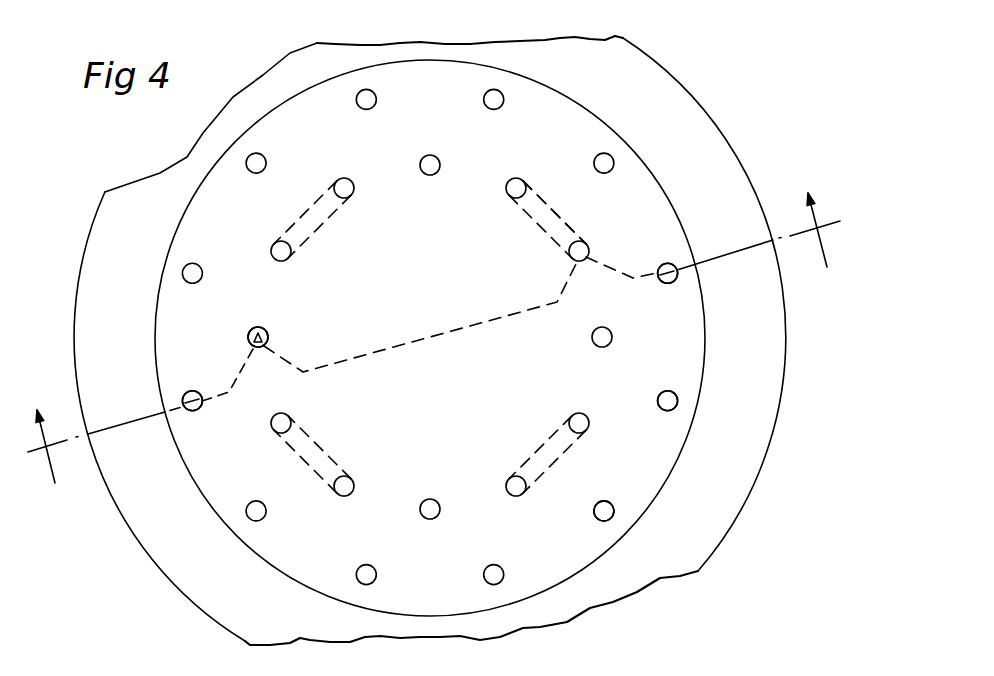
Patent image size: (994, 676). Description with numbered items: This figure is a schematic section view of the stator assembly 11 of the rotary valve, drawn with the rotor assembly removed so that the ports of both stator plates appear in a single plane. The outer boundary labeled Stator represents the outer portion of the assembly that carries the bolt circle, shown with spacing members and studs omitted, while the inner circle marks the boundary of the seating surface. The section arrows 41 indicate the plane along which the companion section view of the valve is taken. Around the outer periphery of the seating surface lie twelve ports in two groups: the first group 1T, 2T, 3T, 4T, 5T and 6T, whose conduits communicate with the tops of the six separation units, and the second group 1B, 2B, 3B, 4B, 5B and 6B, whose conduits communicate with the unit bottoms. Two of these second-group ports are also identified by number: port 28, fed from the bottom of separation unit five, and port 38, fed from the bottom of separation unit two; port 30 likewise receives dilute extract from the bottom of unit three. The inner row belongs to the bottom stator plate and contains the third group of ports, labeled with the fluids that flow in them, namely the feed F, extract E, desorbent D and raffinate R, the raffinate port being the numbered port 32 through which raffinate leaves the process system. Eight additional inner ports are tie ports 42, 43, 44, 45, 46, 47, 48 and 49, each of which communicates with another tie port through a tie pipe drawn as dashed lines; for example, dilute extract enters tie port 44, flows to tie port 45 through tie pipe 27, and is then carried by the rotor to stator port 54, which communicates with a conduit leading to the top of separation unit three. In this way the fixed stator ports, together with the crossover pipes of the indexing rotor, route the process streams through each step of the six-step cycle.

The stator assembly 11 is at (406, 340).
The stator Stator is at (488, 338).
The section arrows 41 is at (439, 343).
The tie pipe 27 is at (556, 210).
The port 28 is at (215, 421).
The port 30 is at (623, 498).
The port 32 is at (237, 328).
The port 38 is at (650, 259).
The tie port 42 is at (314, 200).
The tie port 43 is at (311, 245).
The tie port 44 is at (539, 207).
The tie port 45 is at (571, 257).
The tie port 46 is at (549, 433).
The tie port 47 is at (528, 482).
The tie port 48 is at (344, 456).
The tie port 49 is at (307, 442).
The stator port 54 is at (652, 385).
The port 1T is at (386, 115).
The port 1B is at (477, 115).
The port 2T is at (578, 150).
The port 2B is at (652, 292).
The port 3T is at (647, 417).
The port 3B is at (583, 506).
The port 4T is at (516, 560).
The port 4B is at (351, 561).
The port 5T is at (240, 499).
The port 5B is at (181, 380).
The port 6T is at (214, 255).
The port 6B is at (276, 149).
The desorbent port D is at (413, 178).
The extract port E is at (584, 349).
The feed port F is at (444, 494).
The raffinate port R is at (279, 325).